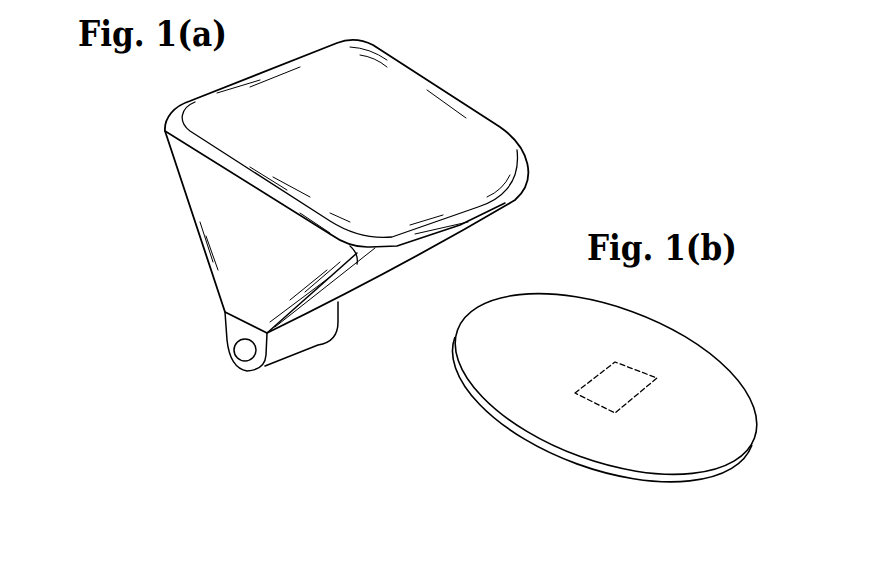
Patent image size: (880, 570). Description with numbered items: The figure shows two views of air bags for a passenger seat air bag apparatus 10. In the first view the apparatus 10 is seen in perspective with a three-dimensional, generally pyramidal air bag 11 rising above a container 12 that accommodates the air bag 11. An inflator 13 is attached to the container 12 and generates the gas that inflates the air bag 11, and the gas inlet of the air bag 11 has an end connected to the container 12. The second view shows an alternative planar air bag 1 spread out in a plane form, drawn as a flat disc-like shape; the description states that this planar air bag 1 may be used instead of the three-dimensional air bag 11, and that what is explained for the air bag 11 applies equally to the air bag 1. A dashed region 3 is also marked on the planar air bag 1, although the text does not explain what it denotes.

In FIG. 1A, the passenger seat air bag apparatus 10 is at (316, 221).
In FIG. 1A, the air bag 11 is at (465, 88).
In FIG. 1A, the container 12 is at (295, 338).
In FIG. 1A, the inflator 13 is at (238, 359).
In FIG. 1B, the planar air bag 1 is at (608, 388).
In FIG. 1B, the mounting region 3 is at (637, 398).